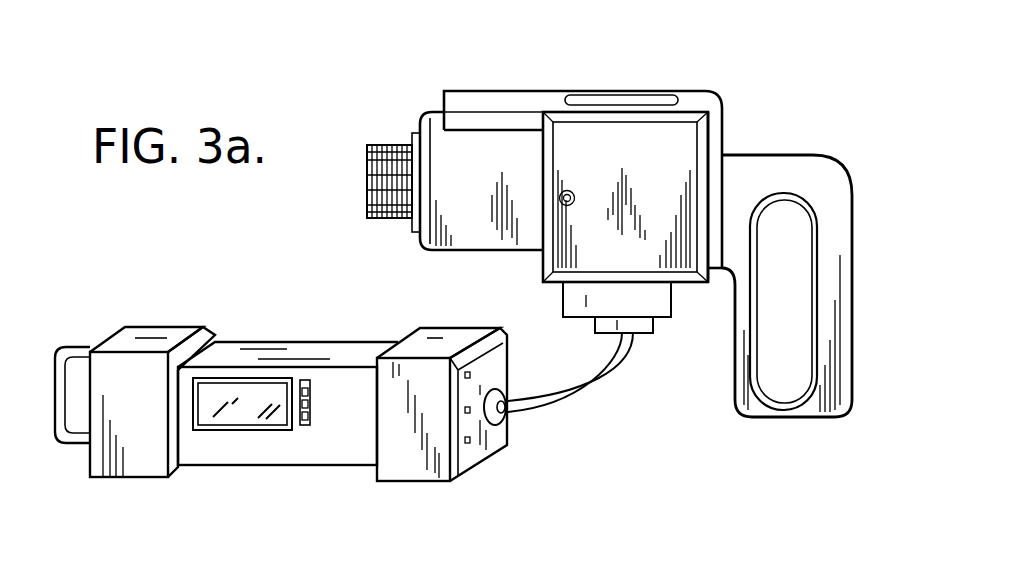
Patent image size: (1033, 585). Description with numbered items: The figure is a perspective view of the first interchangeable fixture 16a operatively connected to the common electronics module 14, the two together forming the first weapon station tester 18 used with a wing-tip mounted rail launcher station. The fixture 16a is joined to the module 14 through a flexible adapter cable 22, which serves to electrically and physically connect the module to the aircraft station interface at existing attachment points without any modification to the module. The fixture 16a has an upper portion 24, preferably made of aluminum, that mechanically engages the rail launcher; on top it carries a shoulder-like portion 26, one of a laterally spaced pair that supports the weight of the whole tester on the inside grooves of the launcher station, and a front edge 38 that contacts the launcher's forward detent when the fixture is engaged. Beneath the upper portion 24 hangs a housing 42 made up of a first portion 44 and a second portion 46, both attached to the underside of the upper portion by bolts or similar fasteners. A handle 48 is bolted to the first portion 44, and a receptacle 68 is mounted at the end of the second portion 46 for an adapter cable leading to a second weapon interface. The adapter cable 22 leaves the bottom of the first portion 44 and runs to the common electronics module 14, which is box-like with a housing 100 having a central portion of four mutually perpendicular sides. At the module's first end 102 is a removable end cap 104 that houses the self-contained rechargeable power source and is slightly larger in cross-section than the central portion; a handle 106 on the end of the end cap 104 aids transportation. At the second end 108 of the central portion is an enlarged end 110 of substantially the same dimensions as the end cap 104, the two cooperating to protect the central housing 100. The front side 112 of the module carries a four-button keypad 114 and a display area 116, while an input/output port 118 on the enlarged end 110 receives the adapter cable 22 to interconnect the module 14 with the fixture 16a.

The common electronics module 14 is at (161, 494).
The first interchangeable fixture 16a is at (715, 116).
The first weapon station tester 18 is at (656, 433).
The flexible adapter cable 22 is at (593, 374).
The upper portion 24 is at (462, 92).
The shoulder-like portion 26 is at (652, 90).
The front edge 38 is at (443, 101).
The housing 42 is at (528, 215).
The first portion 44 is at (673, 284).
The second portion 46 is at (443, 237).
The handle 48 is at (827, 272).
The receptacle 68 is at (366, 192).
The housing 100 is at (287, 457).
The first end 102 is at (215, 333).
The removable end cap 104 is at (143, 348).
The handle 106 is at (54, 438).
The second end 108 is at (365, 453).
The enlarged end 110 is at (443, 473).
The front side 112 is at (212, 462).
The four-button keypad 114 is at (307, 380).
The display area 116 is at (248, 407).
The input/output port 118 is at (508, 426).